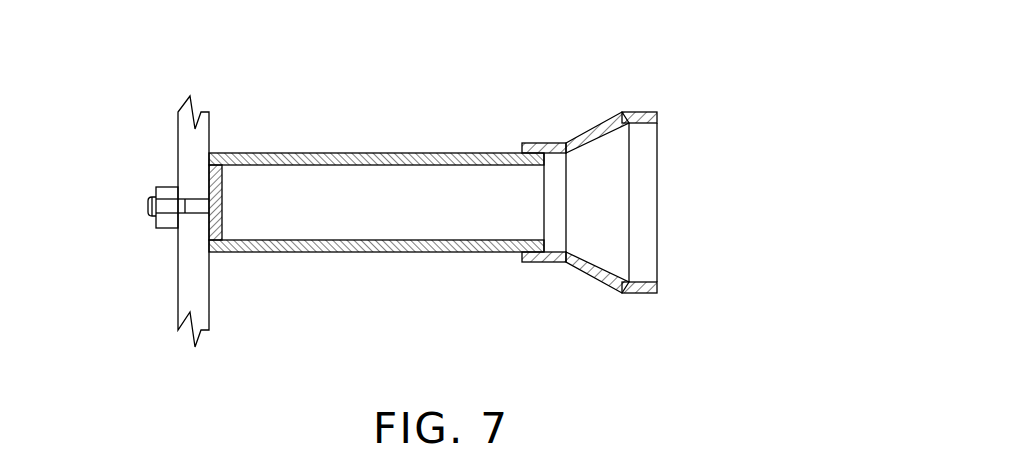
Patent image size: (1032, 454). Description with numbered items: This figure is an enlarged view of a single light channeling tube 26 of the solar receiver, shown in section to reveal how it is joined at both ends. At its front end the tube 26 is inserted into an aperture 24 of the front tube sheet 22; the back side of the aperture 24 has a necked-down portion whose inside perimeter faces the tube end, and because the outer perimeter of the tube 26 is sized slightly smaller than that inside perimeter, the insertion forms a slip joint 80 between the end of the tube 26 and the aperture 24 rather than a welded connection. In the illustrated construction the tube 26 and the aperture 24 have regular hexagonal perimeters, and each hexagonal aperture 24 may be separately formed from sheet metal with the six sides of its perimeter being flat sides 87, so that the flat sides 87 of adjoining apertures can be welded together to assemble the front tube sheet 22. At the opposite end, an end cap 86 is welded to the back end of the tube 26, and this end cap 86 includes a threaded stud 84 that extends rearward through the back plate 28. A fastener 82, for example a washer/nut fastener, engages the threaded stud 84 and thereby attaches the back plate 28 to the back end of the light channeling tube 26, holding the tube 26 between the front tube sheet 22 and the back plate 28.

The front tube sheet 22 is at (575, 132).
The aperture 24 is at (581, 202).
The light channeling tube 26 is at (376, 202).
The back plate 28 is at (212, 128).
The slip joint 80 is at (532, 262).
The fastener 82 is at (163, 187).
The threaded stud 84 is at (147, 207).
The end cap 86 is at (208, 225).
The flat sides 87 is at (638, 112).